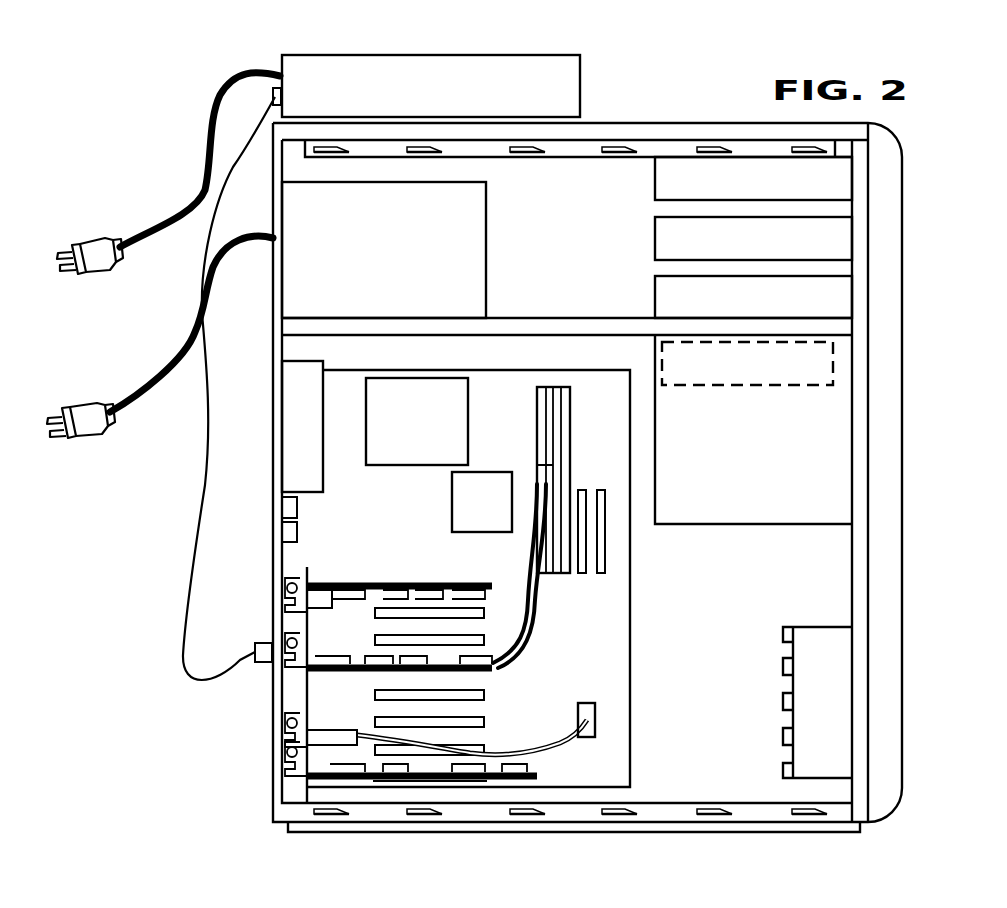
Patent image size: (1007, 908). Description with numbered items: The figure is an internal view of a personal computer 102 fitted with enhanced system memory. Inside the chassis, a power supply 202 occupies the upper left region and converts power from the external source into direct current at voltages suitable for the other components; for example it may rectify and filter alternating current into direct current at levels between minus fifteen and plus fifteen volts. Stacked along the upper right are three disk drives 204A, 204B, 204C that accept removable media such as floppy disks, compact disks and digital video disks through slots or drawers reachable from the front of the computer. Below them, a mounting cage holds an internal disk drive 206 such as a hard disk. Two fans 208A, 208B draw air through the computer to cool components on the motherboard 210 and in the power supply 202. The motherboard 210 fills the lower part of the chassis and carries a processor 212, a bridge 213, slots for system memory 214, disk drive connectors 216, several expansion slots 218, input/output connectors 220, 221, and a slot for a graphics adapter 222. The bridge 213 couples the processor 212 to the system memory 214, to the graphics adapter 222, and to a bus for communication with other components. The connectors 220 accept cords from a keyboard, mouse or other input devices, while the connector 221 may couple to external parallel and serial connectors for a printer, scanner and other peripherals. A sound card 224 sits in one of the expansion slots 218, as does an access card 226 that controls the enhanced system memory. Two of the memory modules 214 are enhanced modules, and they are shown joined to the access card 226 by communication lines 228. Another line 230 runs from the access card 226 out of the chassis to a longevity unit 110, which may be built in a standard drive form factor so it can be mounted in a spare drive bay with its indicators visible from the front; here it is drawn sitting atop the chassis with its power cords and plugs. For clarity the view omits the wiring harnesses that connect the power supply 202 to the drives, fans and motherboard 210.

The computer 102 is at (905, 257).
The longevity unit 110 is at (418, 56).
The power supply 202 is at (390, 266).
The disk drive 204A is at (779, 191).
The disk drive 204B is at (779, 251).
The disk drive 204C is at (779, 310).
The internal disk drive 206 is at (773, 372).
The fan 208A is at (812, 626).
The fan 208B is at (318, 362).
The motherboard 210 is at (632, 622).
The processor 212 is at (433, 434).
The bridge 213 is at (500, 514).
The system memory 214 is at (578, 385).
The disk drive connectors 216 is at (606, 486).
The expansion slots 218 is at (485, 695).
The input/output connectors 220 is at (302, 495).
The input/output connector 221 is at (583, 698).
The graphics adapter 222 is at (367, 585).
The sound card 224 is at (537, 775).
The access card 226 is at (368, 673).
The communication lines 228 is at (540, 588).
The line 230 is at (203, 470).